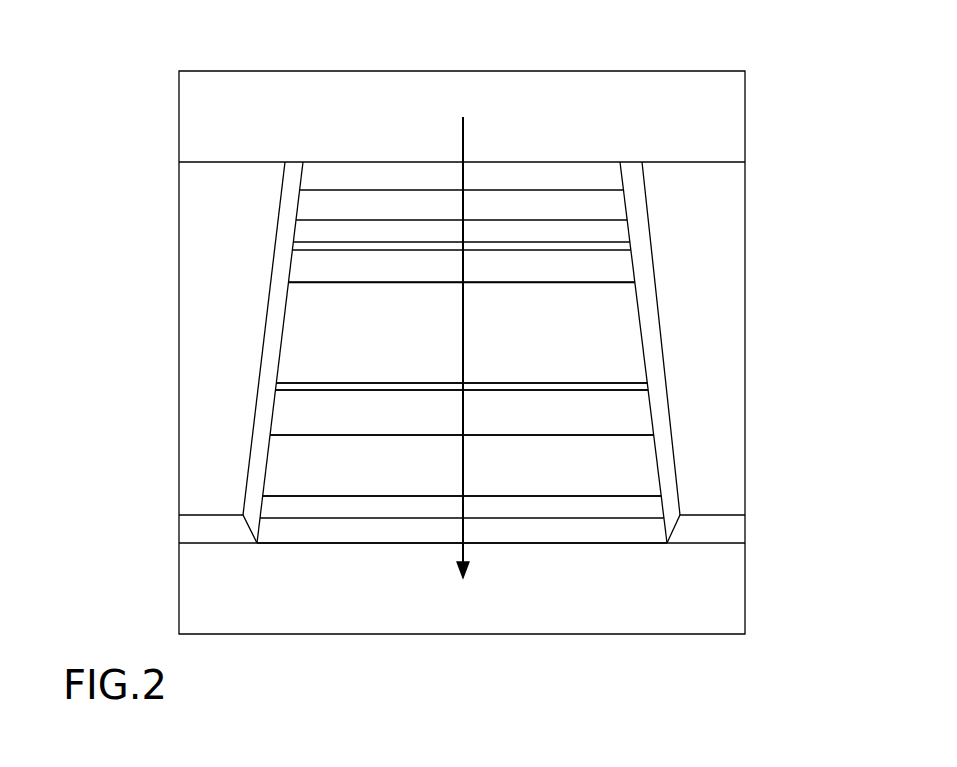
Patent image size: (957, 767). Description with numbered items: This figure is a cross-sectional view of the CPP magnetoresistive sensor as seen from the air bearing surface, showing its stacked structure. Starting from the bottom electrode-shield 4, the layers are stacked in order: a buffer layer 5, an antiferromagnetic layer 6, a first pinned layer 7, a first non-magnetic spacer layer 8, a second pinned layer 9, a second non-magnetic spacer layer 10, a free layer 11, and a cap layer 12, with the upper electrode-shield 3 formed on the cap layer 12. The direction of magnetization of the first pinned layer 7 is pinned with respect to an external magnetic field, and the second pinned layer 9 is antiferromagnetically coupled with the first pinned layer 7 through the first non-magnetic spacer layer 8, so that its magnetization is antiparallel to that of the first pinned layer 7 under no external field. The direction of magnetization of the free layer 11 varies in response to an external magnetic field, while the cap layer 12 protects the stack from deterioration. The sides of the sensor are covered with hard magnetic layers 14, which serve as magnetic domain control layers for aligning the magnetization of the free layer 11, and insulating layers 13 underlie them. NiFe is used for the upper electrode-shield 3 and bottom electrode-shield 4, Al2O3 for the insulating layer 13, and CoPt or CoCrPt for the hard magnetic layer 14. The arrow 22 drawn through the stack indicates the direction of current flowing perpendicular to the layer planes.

The upper electrode-shield 3 is at (592, 93).
The bottom electrode-shield 4 is at (607, 595).
The buffer layer 5 is at (756, 500).
The antiferromagnetic layer 6 is at (648, 469).
The first pinned layer 7 is at (648, 417).
The first non-magnetic spacer layer 8 is at (648, 387).
The second pinned layer 9 is at (756, 382).
The second non-magnetic spacer layer 10 is at (618, 270).
The free layer 11 is at (756, 213).
The cap layer 12 is at (756, 163).
The insulating layer 13 is at (200, 530).
The hard magnetic layer 14 is at (200, 262).
The sensing current direction 22 is at (463, 147).